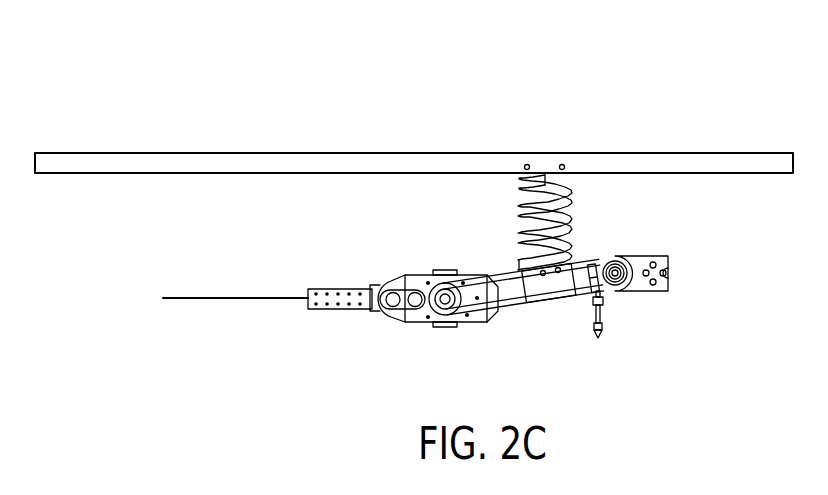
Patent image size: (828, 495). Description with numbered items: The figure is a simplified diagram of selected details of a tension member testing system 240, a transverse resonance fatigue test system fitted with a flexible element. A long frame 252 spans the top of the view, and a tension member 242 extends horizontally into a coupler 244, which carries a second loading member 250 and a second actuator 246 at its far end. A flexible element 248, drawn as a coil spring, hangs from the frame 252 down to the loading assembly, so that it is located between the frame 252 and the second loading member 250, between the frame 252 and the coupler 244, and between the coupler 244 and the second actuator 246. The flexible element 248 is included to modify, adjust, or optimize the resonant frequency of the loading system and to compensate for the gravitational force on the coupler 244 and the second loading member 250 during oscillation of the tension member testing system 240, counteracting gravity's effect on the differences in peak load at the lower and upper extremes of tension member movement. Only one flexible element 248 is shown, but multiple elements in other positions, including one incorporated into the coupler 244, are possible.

The tension member testing system 240 is at (443, 96).
The tension member 242 is at (270, 297).
The coupler 244 is at (470, 326).
The second actuator 246 is at (603, 328).
The flexible element 248 is at (578, 207).
The second loading member 250 is at (537, 303).
The frame 252 is at (601, 152).